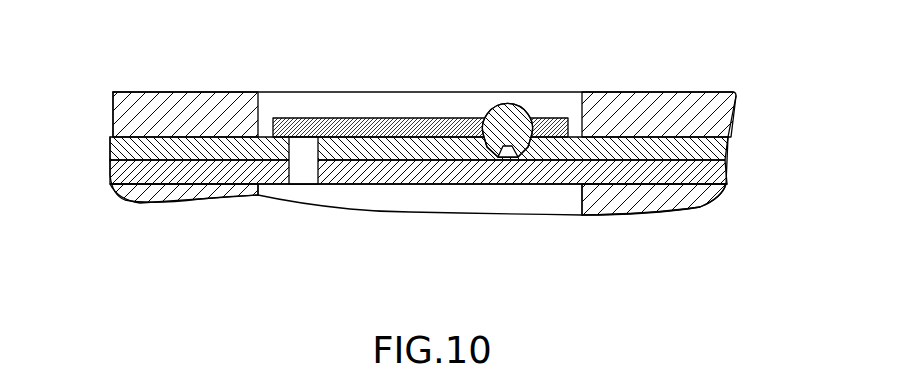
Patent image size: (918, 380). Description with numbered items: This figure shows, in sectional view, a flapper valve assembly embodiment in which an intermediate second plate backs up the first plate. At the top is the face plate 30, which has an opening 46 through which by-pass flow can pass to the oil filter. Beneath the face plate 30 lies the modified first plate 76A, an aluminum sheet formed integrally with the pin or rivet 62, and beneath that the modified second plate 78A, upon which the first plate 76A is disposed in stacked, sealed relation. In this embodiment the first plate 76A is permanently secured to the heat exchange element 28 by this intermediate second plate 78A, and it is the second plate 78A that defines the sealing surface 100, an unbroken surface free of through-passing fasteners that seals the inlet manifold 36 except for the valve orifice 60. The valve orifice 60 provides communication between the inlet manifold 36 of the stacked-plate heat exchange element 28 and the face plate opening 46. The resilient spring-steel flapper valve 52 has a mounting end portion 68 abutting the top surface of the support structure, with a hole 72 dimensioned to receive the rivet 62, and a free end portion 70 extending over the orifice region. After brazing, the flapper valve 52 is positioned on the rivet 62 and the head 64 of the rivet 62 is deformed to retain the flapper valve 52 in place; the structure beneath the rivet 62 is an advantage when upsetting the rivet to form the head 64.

The heat exchange element 28 is at (728, 195).
The face plate 30 is at (722, 122).
The inlet manifold 36 is at (391, 198).
The face plate opening 46 is at (427, 94).
The flapper valve 52 is at (348, 128).
The valve orifice 60 is at (305, 166).
The rivet 62 is at (492, 130).
The rivet head 64 is at (508, 112).
The mounting end portion 68 is at (553, 100).
The free end portion 70 is at (308, 100).
The hole 72 is at (525, 135).
The first plate 76A is at (122, 148).
The second plate 78A is at (125, 167).
The sealing surface 100 is at (473, 185).